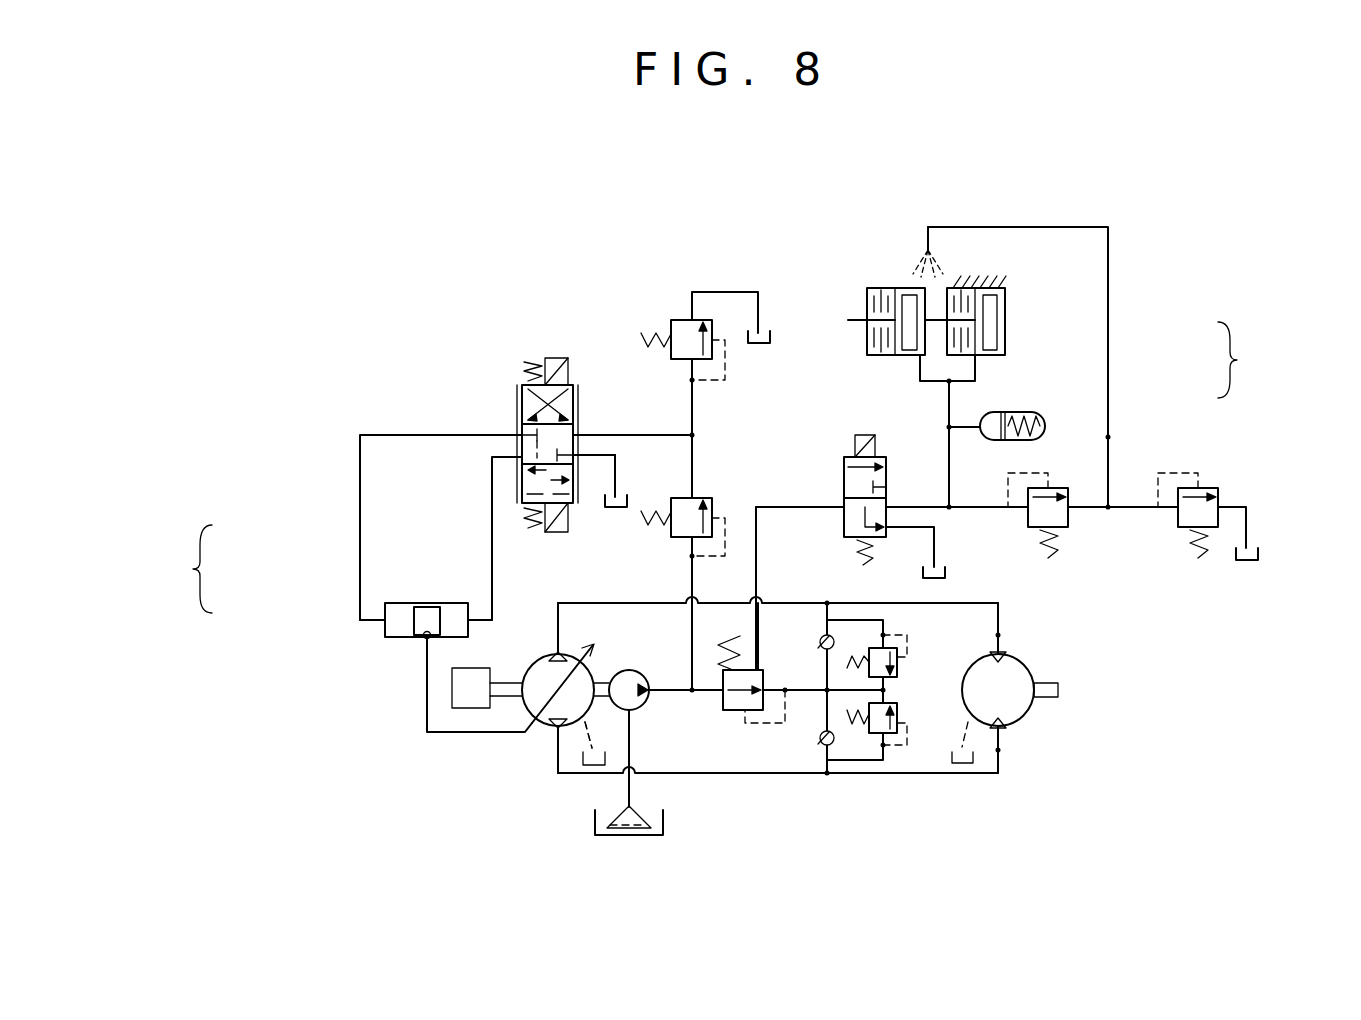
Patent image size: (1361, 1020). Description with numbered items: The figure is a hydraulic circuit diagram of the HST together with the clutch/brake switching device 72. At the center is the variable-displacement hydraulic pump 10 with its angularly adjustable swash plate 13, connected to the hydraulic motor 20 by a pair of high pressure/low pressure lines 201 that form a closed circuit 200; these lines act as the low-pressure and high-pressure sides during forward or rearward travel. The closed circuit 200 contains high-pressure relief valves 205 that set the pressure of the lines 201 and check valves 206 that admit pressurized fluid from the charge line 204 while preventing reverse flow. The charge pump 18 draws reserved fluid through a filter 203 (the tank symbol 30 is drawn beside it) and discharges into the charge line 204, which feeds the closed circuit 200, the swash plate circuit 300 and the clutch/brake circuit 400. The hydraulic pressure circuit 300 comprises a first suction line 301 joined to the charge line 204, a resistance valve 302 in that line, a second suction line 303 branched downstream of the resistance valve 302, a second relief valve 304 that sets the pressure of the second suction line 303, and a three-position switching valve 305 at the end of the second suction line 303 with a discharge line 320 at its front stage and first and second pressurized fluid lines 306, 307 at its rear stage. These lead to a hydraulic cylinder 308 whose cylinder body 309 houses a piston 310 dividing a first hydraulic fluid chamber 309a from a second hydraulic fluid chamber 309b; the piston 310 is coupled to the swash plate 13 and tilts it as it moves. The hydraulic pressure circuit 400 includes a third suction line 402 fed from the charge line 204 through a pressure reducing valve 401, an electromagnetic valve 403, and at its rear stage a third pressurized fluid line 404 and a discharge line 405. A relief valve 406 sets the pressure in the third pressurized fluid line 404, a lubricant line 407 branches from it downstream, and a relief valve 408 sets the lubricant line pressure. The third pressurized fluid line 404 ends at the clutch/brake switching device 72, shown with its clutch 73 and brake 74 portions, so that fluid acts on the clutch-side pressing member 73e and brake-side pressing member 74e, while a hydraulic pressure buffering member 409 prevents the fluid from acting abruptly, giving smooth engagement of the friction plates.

The hydraulic pump 10 is at (547, 733).
The angularly adjustable swash plate 13 is at (531, 710).
The charge pump 18 is at (649, 697).
The hydraulic motor 20 is at (1042, 717).
The oil tank with filter 30 is at (629, 838).
The clutch/brake switching device 72 is at (1056, 338).
The first clutch 73 is at (898, 363).
The second clutch 74 is at (994, 361).
The clutch-side pressing member 73e is at (912, 300).
The brake-side pressing member 74e is at (988, 308).
The closed circuit 200 is at (1064, 743).
The high pressure/low pressure lines 201 is at (1000, 635).
The filter 203 is at (613, 817).
The charge line 204 is at (806, 692).
The high-pressure relief valves 205 is at (897, 707).
The check valves 206 is at (830, 650).
The hydraulic pressure circuit for the operation of the swash plate 300 is at (365, 398).
The first suction line 301 is at (692, 573).
The resistance valve 302 is at (706, 510).
The second suction line 303 is at (617, 435).
The second relief valve 304 is at (683, 330).
The three-position switching valve 305 is at (580, 372).
The first pressurized fluid line 306 is at (447, 435).
The second pressurized fluid line 307 is at (492, 512).
The hydraulic cylinder 308 is at (304, 657).
The cylinder body 309 is at (398, 603).
The piston 310 is at (433, 612).
The first hydraulic fluid chamber 309a is at (403, 629).
The second hydraulic fluid chamber 309b is at (457, 628).
The discharge line 320 is at (523, 385).
The hydraulic pressure circuit for the clutch/brake switching device 400 is at (1123, 566).
The pressure reducing valve 401 is at (738, 699).
The third suction line 402 is at (756, 556).
The electromagnetic valve 403 is at (947, 447).
The third pressurized fluid line 404 is at (893, 466).
The discharge line 405 is at (946, 562).
The relief valve 406 is at (1064, 518).
The lubricant line 407 is at (1108, 437).
The relief valve 408 is at (1216, 488).
The hydraulic pressure buffering member 409 is at (1031, 411).